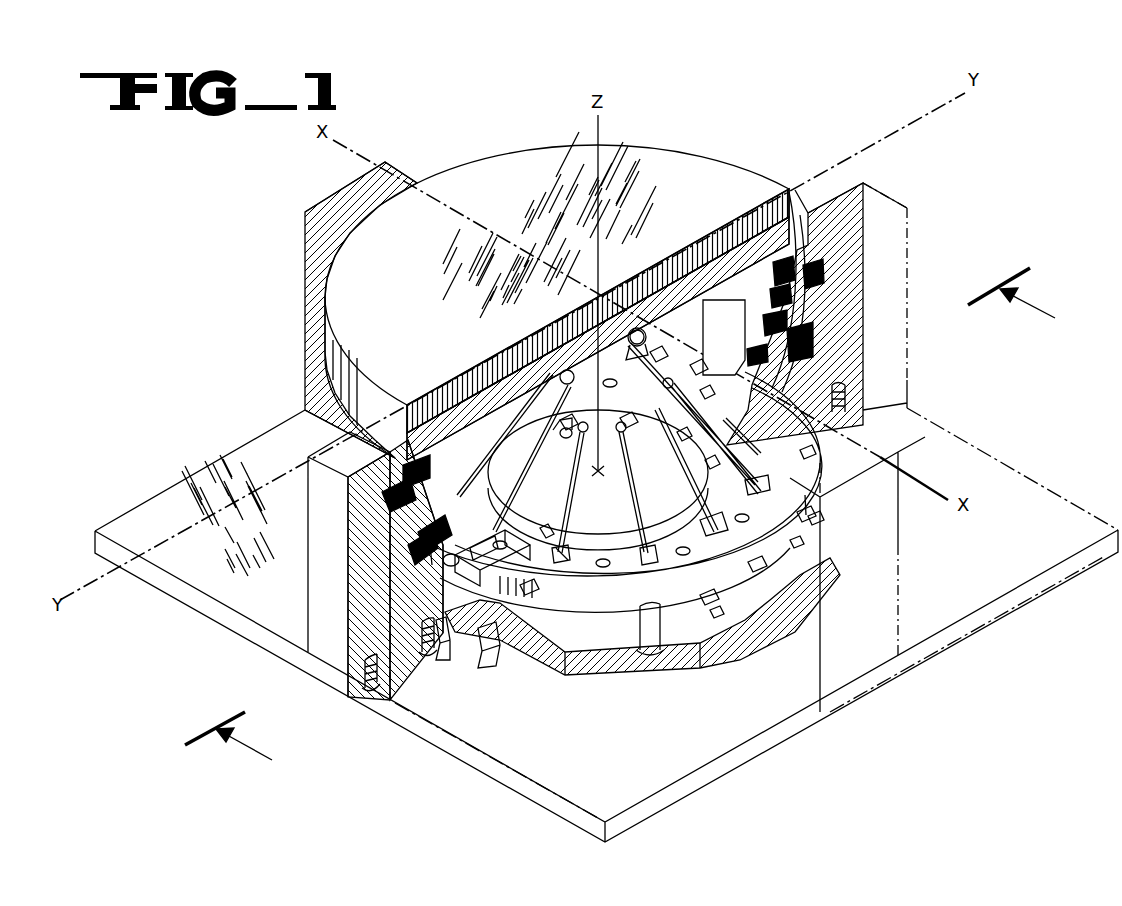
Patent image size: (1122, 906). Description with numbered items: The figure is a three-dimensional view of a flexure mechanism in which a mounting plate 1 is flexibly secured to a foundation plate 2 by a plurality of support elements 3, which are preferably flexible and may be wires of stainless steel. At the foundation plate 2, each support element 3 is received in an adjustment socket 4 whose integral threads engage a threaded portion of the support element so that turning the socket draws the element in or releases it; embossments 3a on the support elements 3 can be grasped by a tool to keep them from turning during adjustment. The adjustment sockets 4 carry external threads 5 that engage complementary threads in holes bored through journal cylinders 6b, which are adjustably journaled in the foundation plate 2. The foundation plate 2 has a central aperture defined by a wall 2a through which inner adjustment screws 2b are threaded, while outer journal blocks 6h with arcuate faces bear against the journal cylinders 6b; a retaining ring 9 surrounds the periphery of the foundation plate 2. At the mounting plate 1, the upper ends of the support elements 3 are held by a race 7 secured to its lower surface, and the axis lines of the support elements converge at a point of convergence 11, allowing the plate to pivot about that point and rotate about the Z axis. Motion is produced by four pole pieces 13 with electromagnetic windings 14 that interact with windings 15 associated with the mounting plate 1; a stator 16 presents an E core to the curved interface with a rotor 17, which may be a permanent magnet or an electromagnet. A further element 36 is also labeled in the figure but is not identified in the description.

The mounting plate 1 is at (745, 218).
The foundation plate 2 is at (656, 560).
The wall 2a is at (580, 428).
The inner adjustment screws 2b is at (545, 530).
The support elements 3 is at (646, 505).
The embossments 3a is at (582, 540).
The adjustment sockets 4 is at (488, 535).
The threads 5 is at (682, 660).
The outer journal blocks 6h is at (452, 650).
The journal cylinders 6b is at (495, 648).
The race 7 is at (650, 334).
The retaining ring 9 is at (596, 606).
The point of convergence 11 is at (606, 283).
The pole pieces 13 is at (286, 623).
The electromagnetic windings 14 is at (835, 268).
The windings 15 is at (795, 296).
The stator component 16 is at (316, 274).
The rotor 17 is at (735, 326).
The ring 36 is at (545, 352).